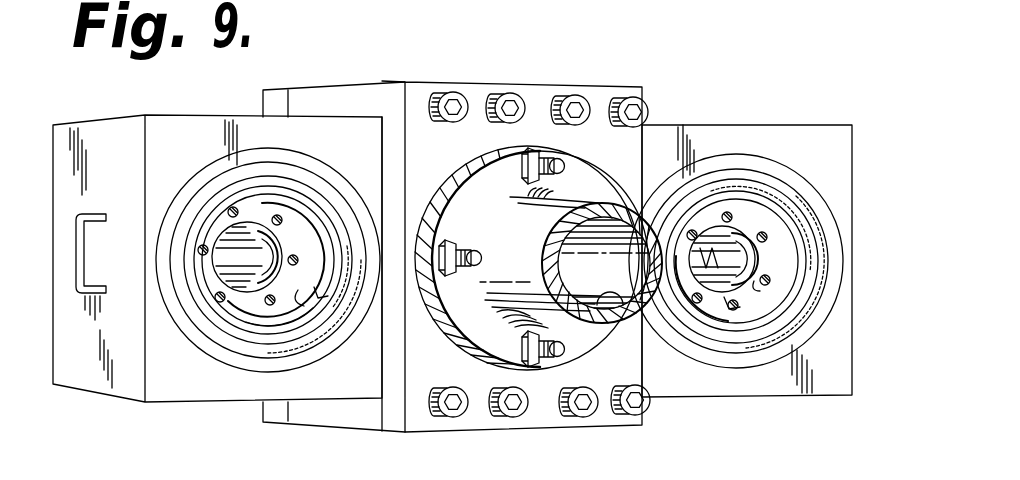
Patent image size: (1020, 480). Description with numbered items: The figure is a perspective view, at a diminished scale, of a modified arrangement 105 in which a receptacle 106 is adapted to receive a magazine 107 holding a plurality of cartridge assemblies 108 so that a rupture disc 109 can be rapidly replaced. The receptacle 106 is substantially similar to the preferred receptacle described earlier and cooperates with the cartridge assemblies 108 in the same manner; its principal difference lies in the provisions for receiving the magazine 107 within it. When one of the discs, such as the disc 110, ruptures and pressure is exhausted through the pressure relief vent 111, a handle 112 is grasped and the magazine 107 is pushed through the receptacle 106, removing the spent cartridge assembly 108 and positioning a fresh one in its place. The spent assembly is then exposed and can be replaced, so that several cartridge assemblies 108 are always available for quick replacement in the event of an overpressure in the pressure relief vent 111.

The modified arrangement 105 is at (710, 86).
The receptacle 106 is at (578, 78).
The magazine 107 is at (161, 392).
The cartridge assembly 108 is at (237, 380).
The rupture disc 109 is at (218, 248).
The disc 110 is at (703, 262).
The pressure relief vent 111 is at (640, 307).
The handle 112 is at (76, 297).